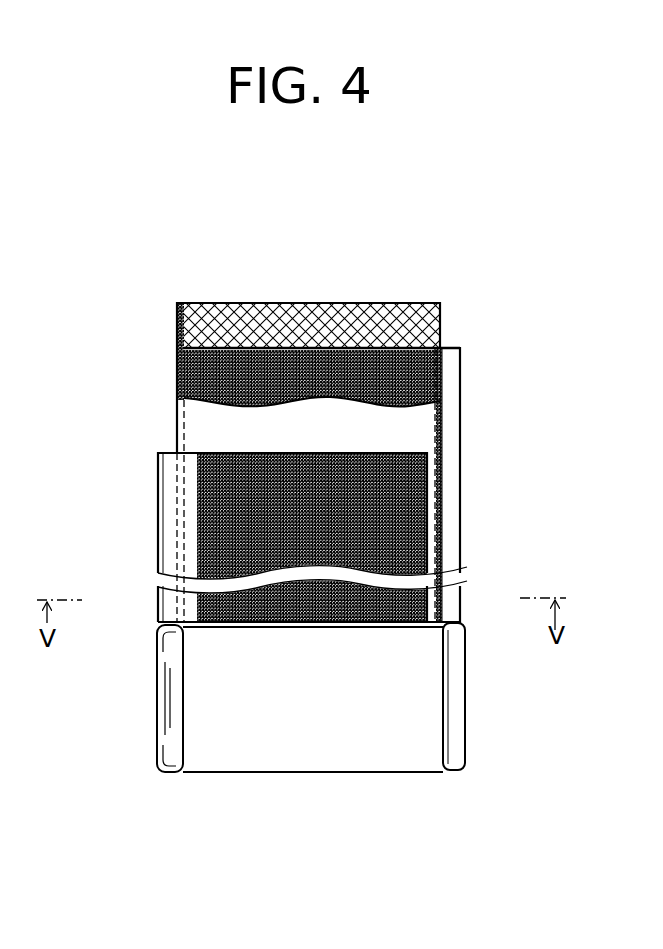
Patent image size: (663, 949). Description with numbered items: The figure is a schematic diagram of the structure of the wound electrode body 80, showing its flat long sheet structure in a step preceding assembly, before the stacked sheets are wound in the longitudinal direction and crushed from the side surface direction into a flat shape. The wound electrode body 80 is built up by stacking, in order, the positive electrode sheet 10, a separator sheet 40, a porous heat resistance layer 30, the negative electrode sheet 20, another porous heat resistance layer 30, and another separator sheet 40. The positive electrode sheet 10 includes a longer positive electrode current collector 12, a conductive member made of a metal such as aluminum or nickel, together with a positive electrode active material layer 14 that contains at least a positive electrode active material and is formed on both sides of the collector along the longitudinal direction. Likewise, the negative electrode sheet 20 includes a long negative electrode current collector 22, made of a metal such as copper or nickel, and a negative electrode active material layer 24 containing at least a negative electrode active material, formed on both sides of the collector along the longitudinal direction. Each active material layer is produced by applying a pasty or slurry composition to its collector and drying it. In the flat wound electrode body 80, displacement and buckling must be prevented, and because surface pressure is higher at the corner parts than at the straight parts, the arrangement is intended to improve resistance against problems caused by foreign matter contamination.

The positive electrode sheet 10 is at (248, 537).
The positive electrode current collector 12 is at (160, 563).
The positive electrode active material layer 14 is at (200, 467).
The negative electrode sheet 20 is at (328, 462).
The negative electrode current collector 22 is at (462, 490).
The negative electrode active material layer 24 is at (432, 364).
The porous heat resistance layer 30 is at (432, 318).
The separator sheet 40 is at (178, 325).
The wound electrode body 80 is at (360, 758).